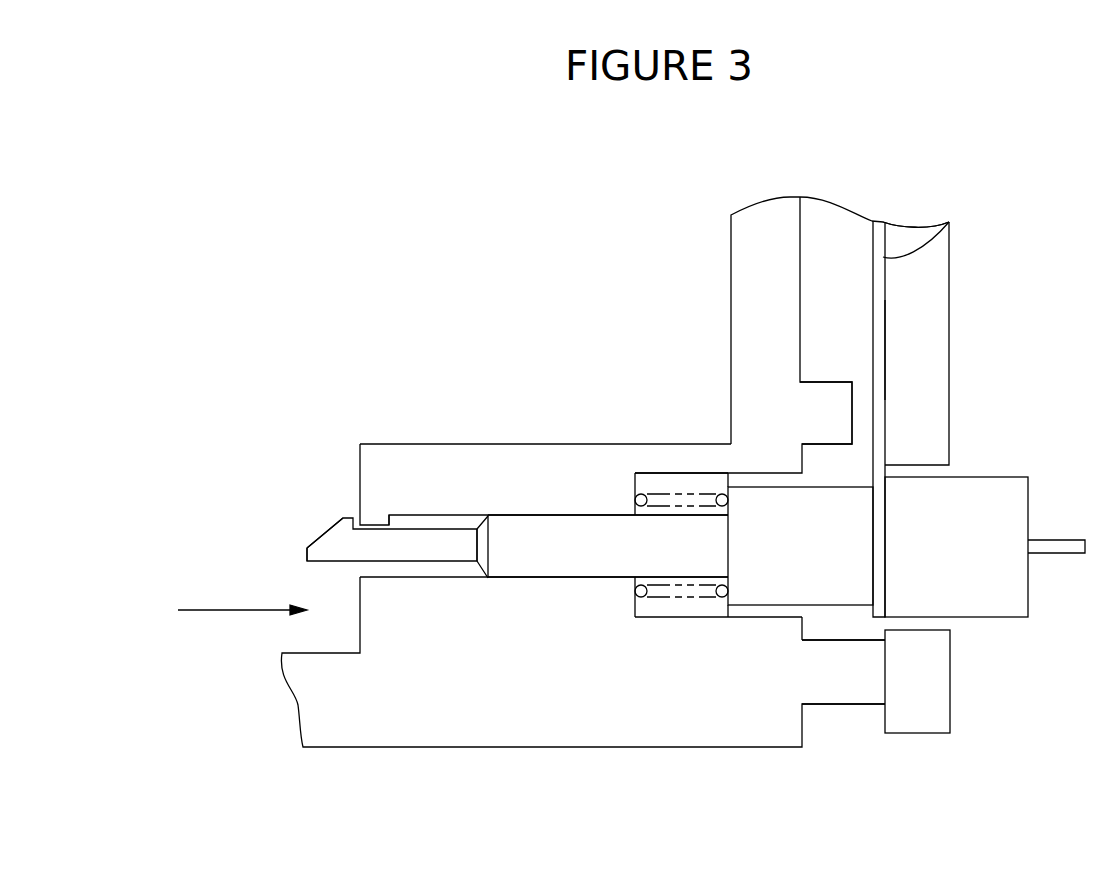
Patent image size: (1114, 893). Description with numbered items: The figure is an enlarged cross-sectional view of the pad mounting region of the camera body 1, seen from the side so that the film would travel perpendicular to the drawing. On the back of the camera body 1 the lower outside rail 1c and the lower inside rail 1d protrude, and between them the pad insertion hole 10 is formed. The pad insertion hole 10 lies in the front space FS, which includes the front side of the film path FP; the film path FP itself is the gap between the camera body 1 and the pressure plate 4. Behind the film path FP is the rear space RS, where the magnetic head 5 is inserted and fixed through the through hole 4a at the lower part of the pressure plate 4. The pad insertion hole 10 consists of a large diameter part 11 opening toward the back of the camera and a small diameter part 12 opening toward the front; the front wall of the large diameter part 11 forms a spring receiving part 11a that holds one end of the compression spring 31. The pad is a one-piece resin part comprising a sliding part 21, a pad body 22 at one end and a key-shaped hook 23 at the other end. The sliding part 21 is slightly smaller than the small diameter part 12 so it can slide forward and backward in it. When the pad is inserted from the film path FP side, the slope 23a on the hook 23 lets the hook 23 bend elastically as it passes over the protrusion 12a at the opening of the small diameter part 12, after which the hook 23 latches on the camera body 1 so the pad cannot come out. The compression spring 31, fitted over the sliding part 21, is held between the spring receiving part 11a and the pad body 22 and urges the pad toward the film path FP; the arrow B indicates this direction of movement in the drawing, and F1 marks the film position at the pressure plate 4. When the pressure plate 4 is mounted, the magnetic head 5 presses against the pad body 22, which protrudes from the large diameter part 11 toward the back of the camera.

The camera body 1 is at (731, 250).
The outside rail 1c is at (847, 675).
The inside rail 1d is at (827, 408).
The pressure plate 4 is at (949, 276).
The through hole 4a is at (940, 623).
The magnetic head 5 is at (1005, 617).
The pad insertion hole 10 is at (517, 618).
The large diameter part 11 is at (680, 608).
The spring receiving part 11a is at (638, 490).
The small diameter part 12 is at (437, 565).
The protrusion 12a is at (373, 533).
The sliding part 21 is at (540, 542).
The pad body 22 is at (748, 578).
The hook 23 is at (307, 550).
The slope 23a is at (327, 530).
The compression spring 31 is at (708, 497).
The direction arrow B is at (242, 623).
The force F1 is at (947, 233).
The film path FP is at (838, 308).
The front space FS is at (555, 305).
The rear space RS is at (1103, 443).